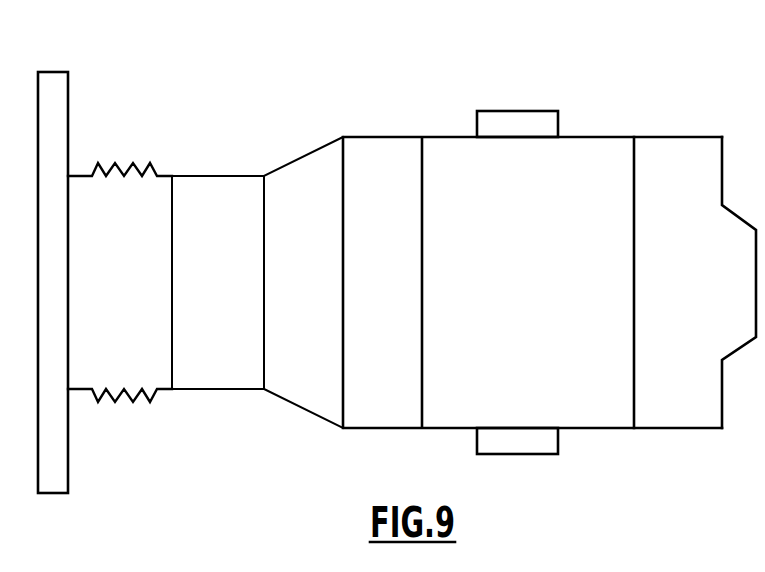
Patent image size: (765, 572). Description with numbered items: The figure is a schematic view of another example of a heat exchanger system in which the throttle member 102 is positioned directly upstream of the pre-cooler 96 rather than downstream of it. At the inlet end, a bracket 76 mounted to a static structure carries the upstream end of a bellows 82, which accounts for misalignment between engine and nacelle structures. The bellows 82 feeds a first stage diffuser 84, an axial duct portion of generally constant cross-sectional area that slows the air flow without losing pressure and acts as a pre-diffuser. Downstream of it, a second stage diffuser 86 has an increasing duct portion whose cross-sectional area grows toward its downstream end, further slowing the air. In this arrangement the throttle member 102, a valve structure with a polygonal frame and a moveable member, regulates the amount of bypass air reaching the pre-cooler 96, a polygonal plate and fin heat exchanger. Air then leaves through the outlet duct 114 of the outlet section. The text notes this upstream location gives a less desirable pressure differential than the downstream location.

The bracket 76 is at (53, 72).
The bellows 82 is at (115, 165).
The first stage diffuser 84 is at (200, 177).
The second stage diffuser 86 is at (310, 152).
The throttle member 102 is at (385, 137).
The pre-cooler 96 is at (585, 137).
The outlet duct 114 is at (689, 136).